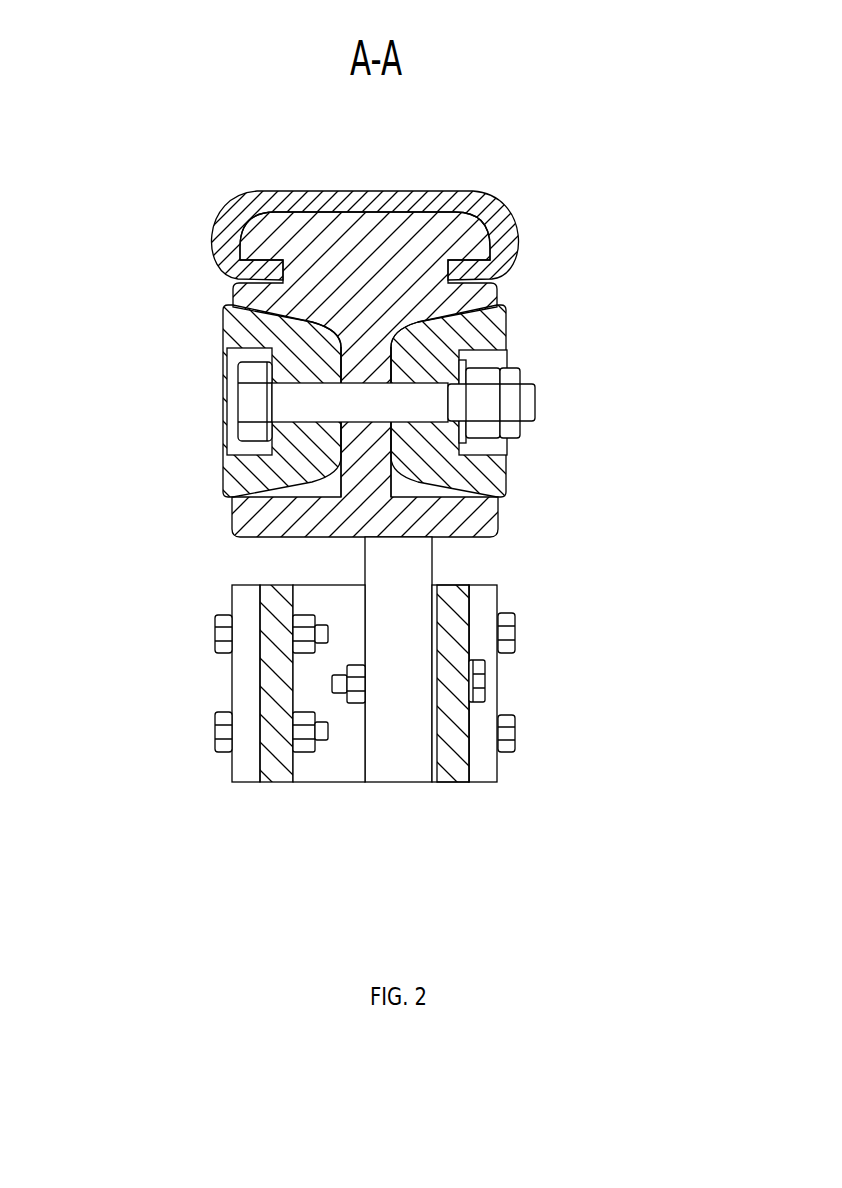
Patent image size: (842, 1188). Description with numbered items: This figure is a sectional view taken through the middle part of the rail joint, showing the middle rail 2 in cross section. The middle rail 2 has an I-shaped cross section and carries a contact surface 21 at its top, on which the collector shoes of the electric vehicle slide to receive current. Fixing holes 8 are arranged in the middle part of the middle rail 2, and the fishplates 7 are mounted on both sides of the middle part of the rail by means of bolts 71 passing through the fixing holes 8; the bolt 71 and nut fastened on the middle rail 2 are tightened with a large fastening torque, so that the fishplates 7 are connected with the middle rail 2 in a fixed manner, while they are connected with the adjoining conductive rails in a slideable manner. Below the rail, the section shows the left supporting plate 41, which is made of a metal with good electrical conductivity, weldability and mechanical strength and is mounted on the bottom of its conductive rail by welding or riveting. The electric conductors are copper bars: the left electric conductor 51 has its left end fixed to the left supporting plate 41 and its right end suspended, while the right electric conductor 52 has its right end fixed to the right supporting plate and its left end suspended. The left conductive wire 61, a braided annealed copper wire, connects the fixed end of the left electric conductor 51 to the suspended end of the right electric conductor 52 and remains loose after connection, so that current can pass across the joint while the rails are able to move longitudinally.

The middle rail 2 is at (303, 243).
The contact surface 21 is at (445, 193).
The fixing holes 8 is at (372, 378).
The bolts 71 is at (303, 398).
The fishplates 7 is at (245, 477).
The left conductive wire 61 is at (248, 632).
The left electric conductor 51 is at (458, 757).
The right electric conductor 52 is at (281, 750).
The left supporting plate 41 is at (390, 750).